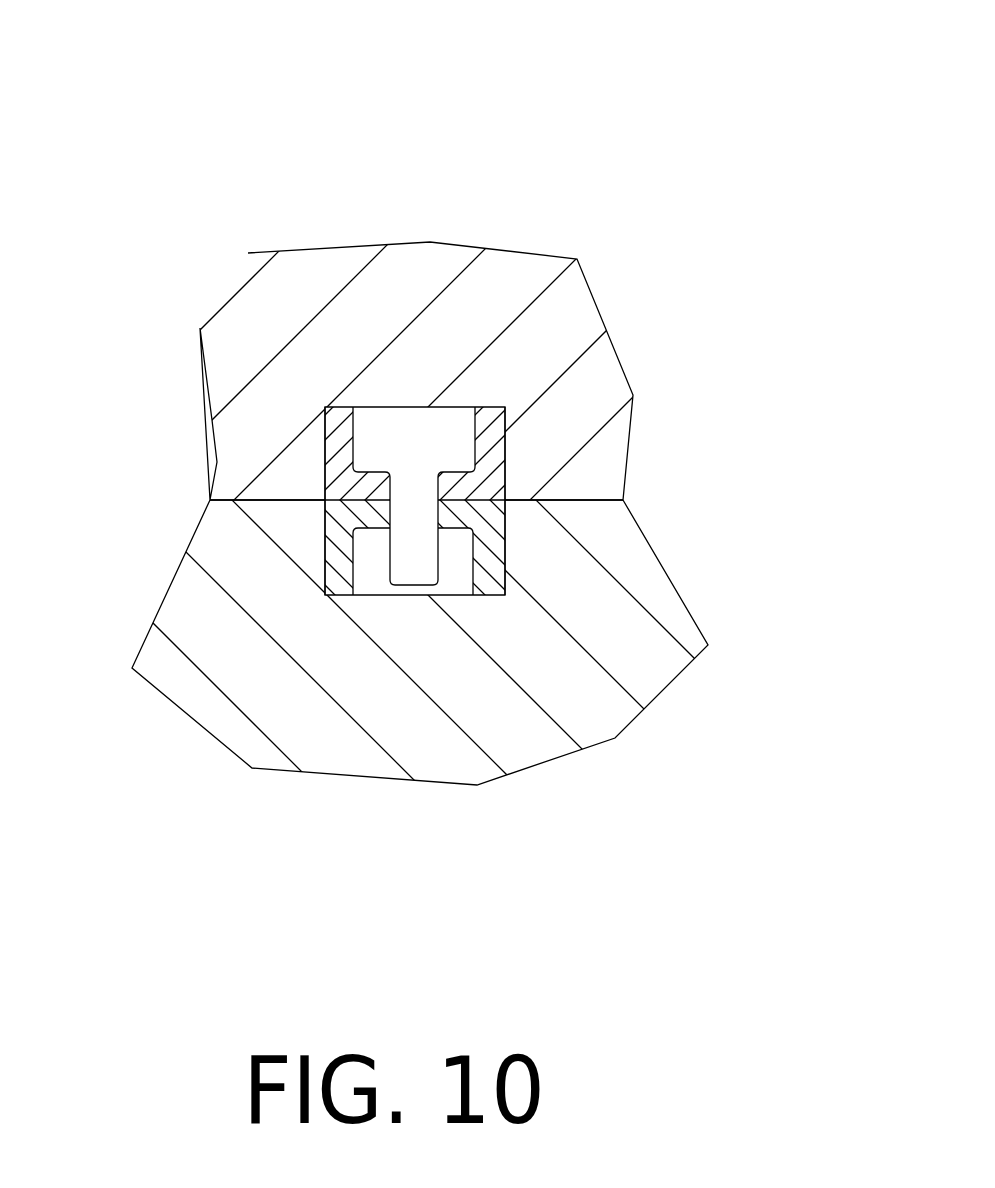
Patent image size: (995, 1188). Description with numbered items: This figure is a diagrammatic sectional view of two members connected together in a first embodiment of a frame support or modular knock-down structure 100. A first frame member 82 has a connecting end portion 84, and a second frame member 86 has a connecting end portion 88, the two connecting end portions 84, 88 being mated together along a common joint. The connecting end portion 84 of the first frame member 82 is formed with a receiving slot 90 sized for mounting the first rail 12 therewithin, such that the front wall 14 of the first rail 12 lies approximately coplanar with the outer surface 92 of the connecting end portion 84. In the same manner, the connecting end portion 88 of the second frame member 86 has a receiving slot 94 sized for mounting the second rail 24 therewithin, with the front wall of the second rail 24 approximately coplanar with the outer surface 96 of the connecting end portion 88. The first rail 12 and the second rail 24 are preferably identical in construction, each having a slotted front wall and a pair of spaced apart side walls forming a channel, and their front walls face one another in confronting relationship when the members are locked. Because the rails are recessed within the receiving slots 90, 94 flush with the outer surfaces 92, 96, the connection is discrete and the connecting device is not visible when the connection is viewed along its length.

The modular knock-down structure 100 is at (230, 157).
The first frame member 82 is at (470, 325).
The second frame member 86 is at (237, 665).
The connecting end portion 88 is at (230, 524).
The first rail 12 is at (487, 450).
The front wall 14 is at (342, 502).
The second rail 24 is at (492, 523).
The receiving slot 90 is at (325, 445).
The outer surface 96 is at (290, 500).
The connecting end portion 84 is at (530, 473).
The outer surface 92 is at (580, 493).
The receiving slot 94 is at (320, 542).